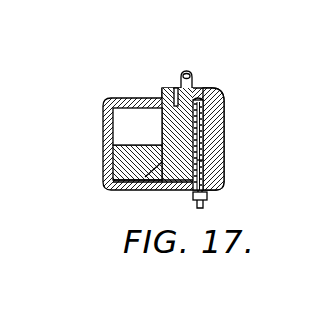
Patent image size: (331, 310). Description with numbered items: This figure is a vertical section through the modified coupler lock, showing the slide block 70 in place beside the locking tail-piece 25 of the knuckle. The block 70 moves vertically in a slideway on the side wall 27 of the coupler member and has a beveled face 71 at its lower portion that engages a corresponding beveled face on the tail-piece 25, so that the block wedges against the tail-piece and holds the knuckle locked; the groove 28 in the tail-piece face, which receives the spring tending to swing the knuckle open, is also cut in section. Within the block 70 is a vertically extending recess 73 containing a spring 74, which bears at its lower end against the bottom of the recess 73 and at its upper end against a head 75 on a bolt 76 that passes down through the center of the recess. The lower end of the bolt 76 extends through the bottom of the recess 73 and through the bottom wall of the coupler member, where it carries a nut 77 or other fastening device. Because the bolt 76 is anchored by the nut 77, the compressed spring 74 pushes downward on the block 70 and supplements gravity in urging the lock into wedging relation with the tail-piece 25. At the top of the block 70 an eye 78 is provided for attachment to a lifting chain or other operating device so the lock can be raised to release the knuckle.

The side wall 27 is at (116, 119).
The groove 28 is at (103, 140).
The locking tail-piece 25 is at (130, 159).
The beveled face 71 is at (123, 191).
The slide block 70 is at (170, 88).
The eye 78 is at (186, 71).
The head 75 is at (202, 90).
The recess 73 is at (224, 104).
The spring 74 is at (203, 145).
The bolt 76 is at (203, 160).
The nut 77 is at (207, 196).